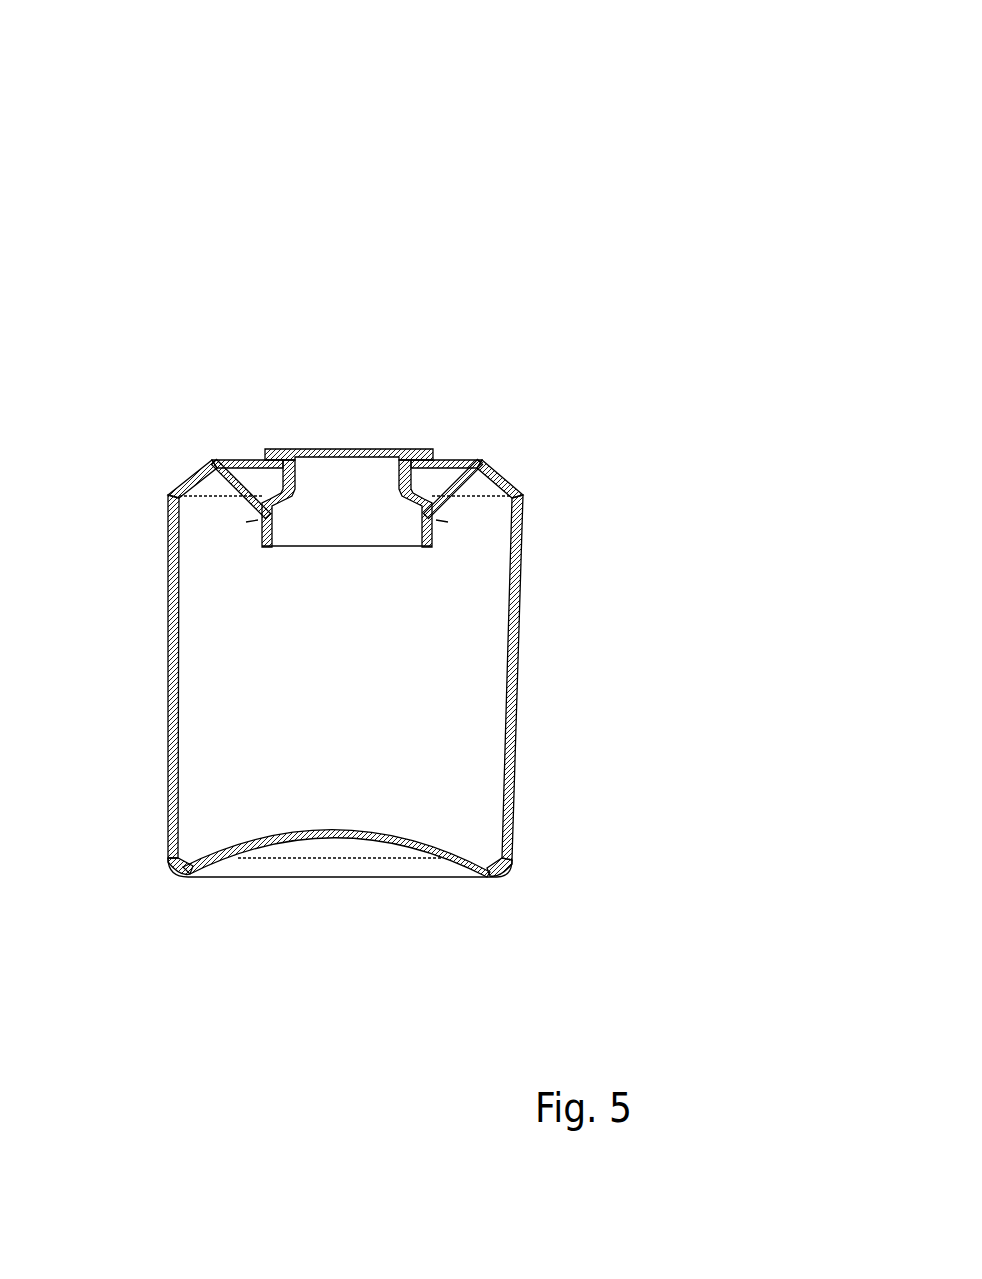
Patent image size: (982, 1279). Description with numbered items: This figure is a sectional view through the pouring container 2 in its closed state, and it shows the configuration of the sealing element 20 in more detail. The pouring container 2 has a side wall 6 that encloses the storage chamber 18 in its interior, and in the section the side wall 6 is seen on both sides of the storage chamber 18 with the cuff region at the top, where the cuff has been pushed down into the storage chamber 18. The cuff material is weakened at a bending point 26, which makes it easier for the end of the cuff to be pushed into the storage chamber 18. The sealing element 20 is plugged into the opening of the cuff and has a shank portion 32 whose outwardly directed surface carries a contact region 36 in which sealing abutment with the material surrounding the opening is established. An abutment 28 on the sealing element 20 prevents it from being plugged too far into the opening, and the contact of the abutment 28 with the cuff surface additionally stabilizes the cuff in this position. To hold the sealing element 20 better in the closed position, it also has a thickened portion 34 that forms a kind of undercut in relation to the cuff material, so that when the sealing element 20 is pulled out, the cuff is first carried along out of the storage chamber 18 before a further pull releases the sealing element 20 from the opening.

The pouring container 2 is at (291, 93).
The side wall 6 is at (513, 727).
The storage chamber 18 is at (345, 677).
The sealing element 20 is at (355, 448).
The bending point 26 is at (470, 478).
The abutment 28 is at (497, 470).
The shank portion 32 is at (432, 515).
The thickened portion 34 is at (432, 543).
The contact region 36 is at (195, 474).